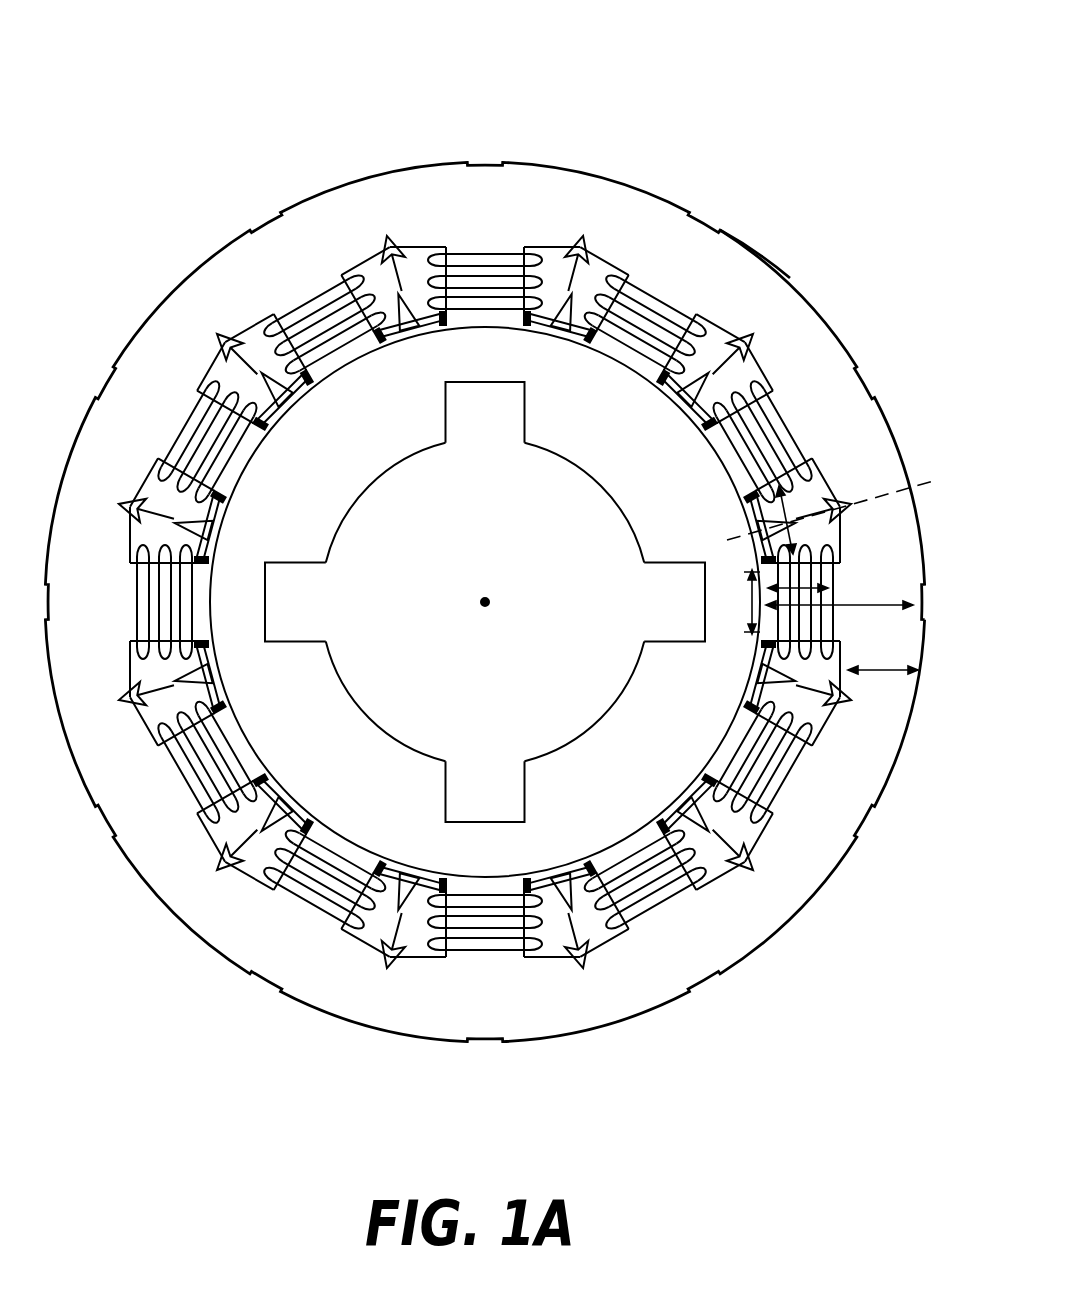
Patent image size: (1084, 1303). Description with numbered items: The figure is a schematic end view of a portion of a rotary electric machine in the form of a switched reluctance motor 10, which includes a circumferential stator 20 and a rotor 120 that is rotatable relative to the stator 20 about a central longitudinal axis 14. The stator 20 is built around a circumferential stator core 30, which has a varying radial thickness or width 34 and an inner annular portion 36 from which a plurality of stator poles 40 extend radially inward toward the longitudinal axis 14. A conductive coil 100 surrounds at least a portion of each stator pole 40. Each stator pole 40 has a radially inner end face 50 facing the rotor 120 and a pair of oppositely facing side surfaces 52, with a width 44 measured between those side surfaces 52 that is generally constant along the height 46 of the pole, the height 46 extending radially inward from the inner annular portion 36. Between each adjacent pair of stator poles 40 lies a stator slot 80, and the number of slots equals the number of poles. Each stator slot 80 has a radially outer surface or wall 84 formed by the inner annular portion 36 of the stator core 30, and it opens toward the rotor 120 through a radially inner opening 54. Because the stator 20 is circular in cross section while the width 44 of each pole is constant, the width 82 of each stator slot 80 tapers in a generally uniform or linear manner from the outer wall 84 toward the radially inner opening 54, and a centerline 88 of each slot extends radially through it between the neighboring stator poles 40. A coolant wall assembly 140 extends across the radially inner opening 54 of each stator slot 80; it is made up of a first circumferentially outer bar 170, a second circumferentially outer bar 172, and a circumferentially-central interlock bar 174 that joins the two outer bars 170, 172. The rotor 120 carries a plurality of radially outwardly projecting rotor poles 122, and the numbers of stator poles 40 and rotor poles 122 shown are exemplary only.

The switched reluctance motor 10 is at (697, 99).
The longitudinal axis 14 is at (499, 568).
The stator 20 is at (781, 226).
The stator core 30 is at (875, 430).
The radial thickness or width 34 is at (878, 668).
The inner annular portion 36 is at (792, 337).
The stator pole 40 is at (510, 668).
The width 44 is at (748, 606).
The height 46 is at (800, 588).
The radially inner end face 50 is at (485, 602).
The side surfaces 52 is at (522, 668).
The radially inner opening 54 is at (485, 602).
The stator slot 80 is at (485, 652).
The width 82 is at (790, 507).
The radially outer surface or wall 84 is at (485, 655).
The centerline 88 is at (930, 480).
The conductive coil 100 is at (554, 729).
The rotor 120 is at (485, 602).
The rotor pole 122 is at (485, 602).
The coolant wall assembly 140 is at (608, 747).
The first circumferentially outer bar 170 is at (485, 602).
The second circumferentially outer bar 172 is at (646, 801).
The circumferentially-central interlock bar 174 is at (655, 773).